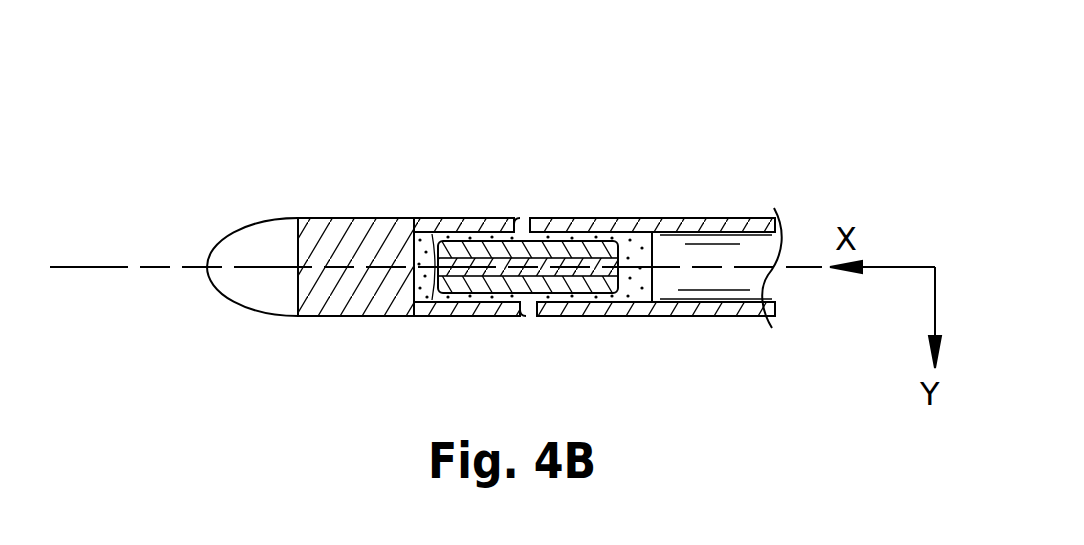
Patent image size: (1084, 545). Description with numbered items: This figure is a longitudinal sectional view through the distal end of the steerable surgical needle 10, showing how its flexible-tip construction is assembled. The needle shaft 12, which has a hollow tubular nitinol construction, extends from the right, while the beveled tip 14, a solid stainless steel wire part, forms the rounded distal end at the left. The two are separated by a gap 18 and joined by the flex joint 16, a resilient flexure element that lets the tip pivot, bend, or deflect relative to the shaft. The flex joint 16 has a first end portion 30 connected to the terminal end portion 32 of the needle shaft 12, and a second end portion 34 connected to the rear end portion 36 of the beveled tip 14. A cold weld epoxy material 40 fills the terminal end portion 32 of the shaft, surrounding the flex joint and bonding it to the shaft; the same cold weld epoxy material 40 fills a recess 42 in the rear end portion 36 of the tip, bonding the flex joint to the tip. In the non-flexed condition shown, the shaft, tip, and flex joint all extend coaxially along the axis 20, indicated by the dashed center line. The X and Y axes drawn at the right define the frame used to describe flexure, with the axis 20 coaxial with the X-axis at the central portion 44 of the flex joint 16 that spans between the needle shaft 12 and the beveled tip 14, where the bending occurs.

The steerable surgical needle 10 is at (292, 108).
The needle shaft 12 is at (680, 226).
The beveled tip 14 is at (347, 245).
The flex joint 16 is at (598, 285).
The gap 18 is at (524, 240).
The axis 20 is at (92, 267).
The first end portion 30 is at (572, 245).
The terminal end portion 32 is at (568, 302).
The second end portion 34 is at (460, 245).
The rear end portion 36 is at (465, 302).
The cold weld epoxy material 40 is at (545, 302).
The recess 42 is at (432, 302).
The central portion 44 is at (527, 245).